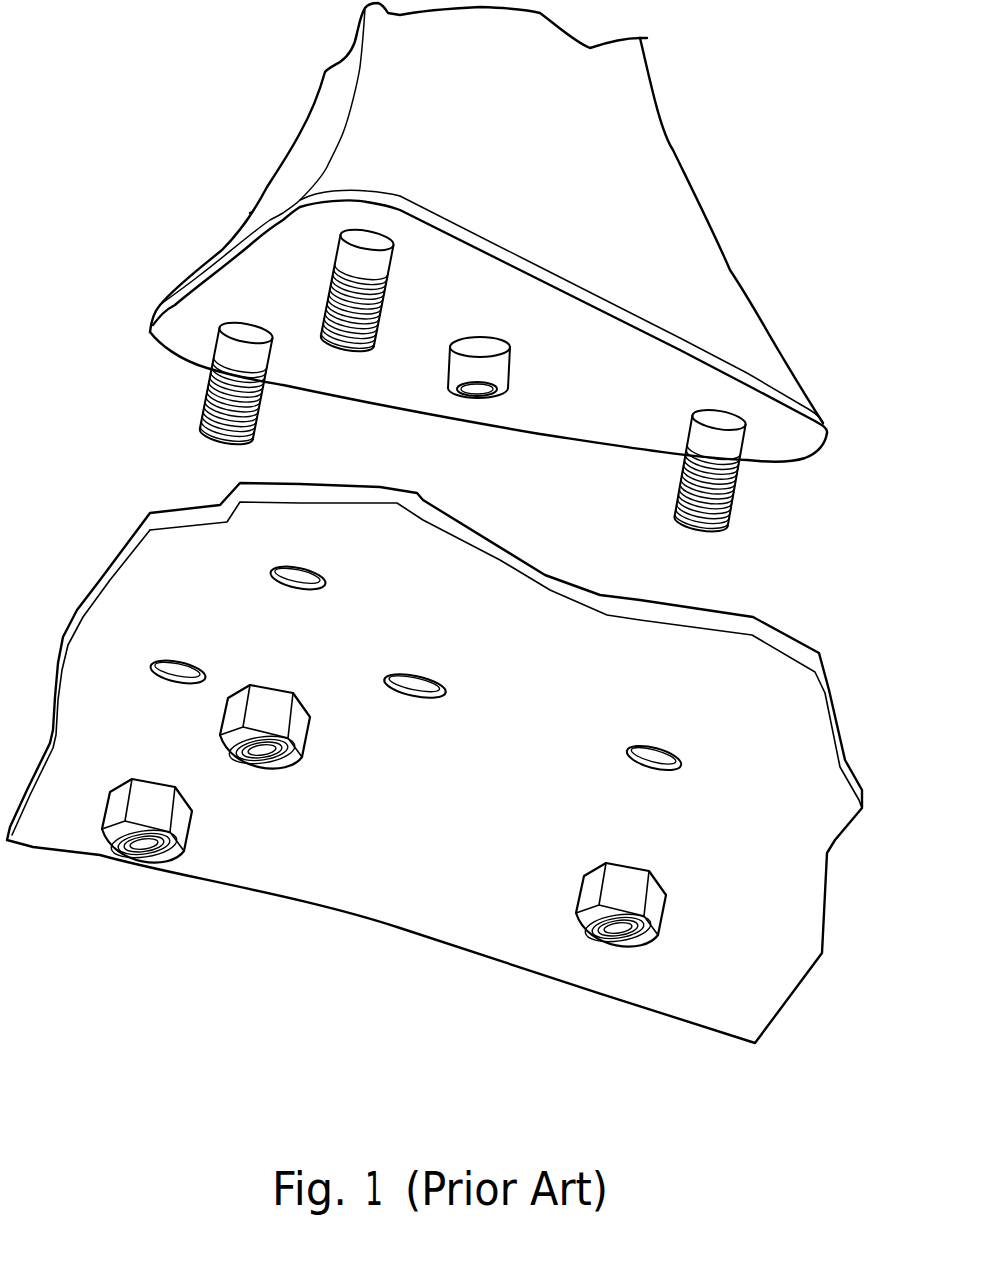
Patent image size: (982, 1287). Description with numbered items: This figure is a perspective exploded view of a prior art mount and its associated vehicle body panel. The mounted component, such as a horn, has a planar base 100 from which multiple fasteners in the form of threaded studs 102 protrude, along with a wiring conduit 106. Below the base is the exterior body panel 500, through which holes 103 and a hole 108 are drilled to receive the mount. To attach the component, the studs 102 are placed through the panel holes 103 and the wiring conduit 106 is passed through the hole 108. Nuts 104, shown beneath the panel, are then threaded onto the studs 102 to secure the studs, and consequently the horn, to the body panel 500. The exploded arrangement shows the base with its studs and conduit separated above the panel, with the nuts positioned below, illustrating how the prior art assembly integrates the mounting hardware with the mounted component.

The planar base 100 is at (237, 253).
The threaded studs 102 is at (263, 340).
The holes 103 is at (302, 573).
The nuts 104 is at (310, 737).
The wiring conduit 106 is at (502, 368).
The hole 108 is at (413, 673).
The body panel 500 is at (827, 880).